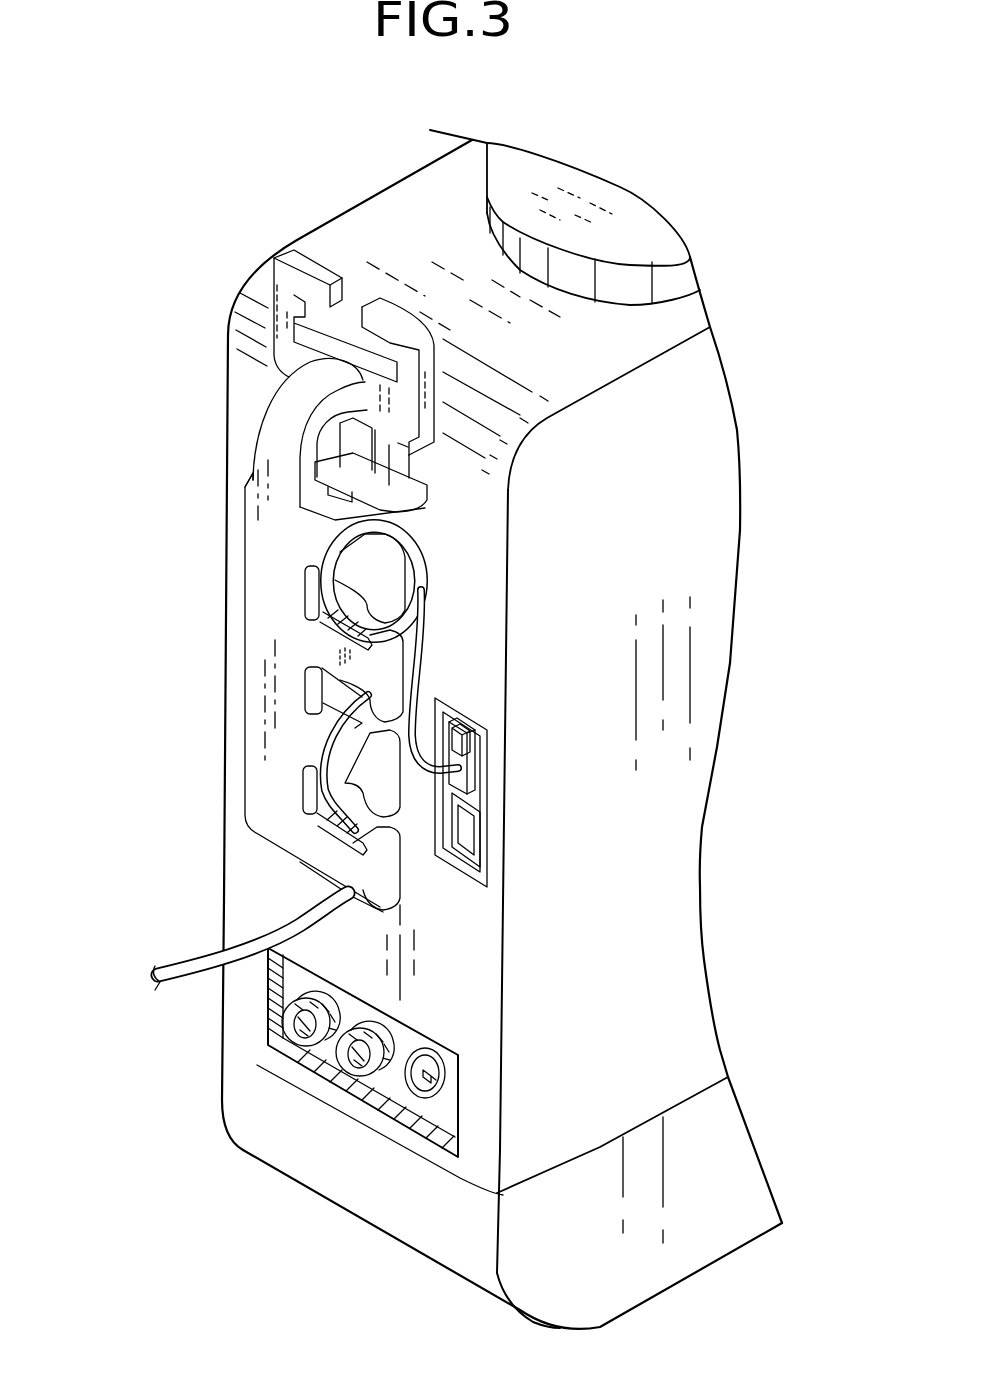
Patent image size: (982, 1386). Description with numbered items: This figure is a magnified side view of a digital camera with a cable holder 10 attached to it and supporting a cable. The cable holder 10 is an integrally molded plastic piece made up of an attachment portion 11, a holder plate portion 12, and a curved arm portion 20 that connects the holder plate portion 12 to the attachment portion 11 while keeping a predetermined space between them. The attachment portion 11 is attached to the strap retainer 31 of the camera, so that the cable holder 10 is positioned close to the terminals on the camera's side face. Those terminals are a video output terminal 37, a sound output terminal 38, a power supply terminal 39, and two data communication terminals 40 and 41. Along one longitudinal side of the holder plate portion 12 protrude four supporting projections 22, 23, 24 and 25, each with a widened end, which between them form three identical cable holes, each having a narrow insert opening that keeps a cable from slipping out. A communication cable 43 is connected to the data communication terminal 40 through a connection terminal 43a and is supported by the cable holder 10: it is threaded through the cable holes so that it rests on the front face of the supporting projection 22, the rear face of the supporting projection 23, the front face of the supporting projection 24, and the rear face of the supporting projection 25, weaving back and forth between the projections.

The cable holder 10 is at (240, 766).
The attachment portion 11 is at (300, 354).
The holder plate portion 12 is at (268, 633).
The arm portion 20 is at (285, 428).
The supporting projection 22 is at (373, 577).
The supporting projection 23 is at (370, 677).
The supporting projection 24 is at (397, 793).
The supporting projection 25 is at (392, 875).
The strap retainer 31 is at (413, 502).
The video output terminal 37 is at (278, 1048).
The sound output terminal 38 is at (340, 1063).
The power supply terminal 39 is at (417, 1090).
The data communication terminal 40 is at (476, 768).
The data communication terminal 41 is at (480, 838).
The communication cable 43 is at (328, 566).
The connection terminal 43a is at (475, 738).